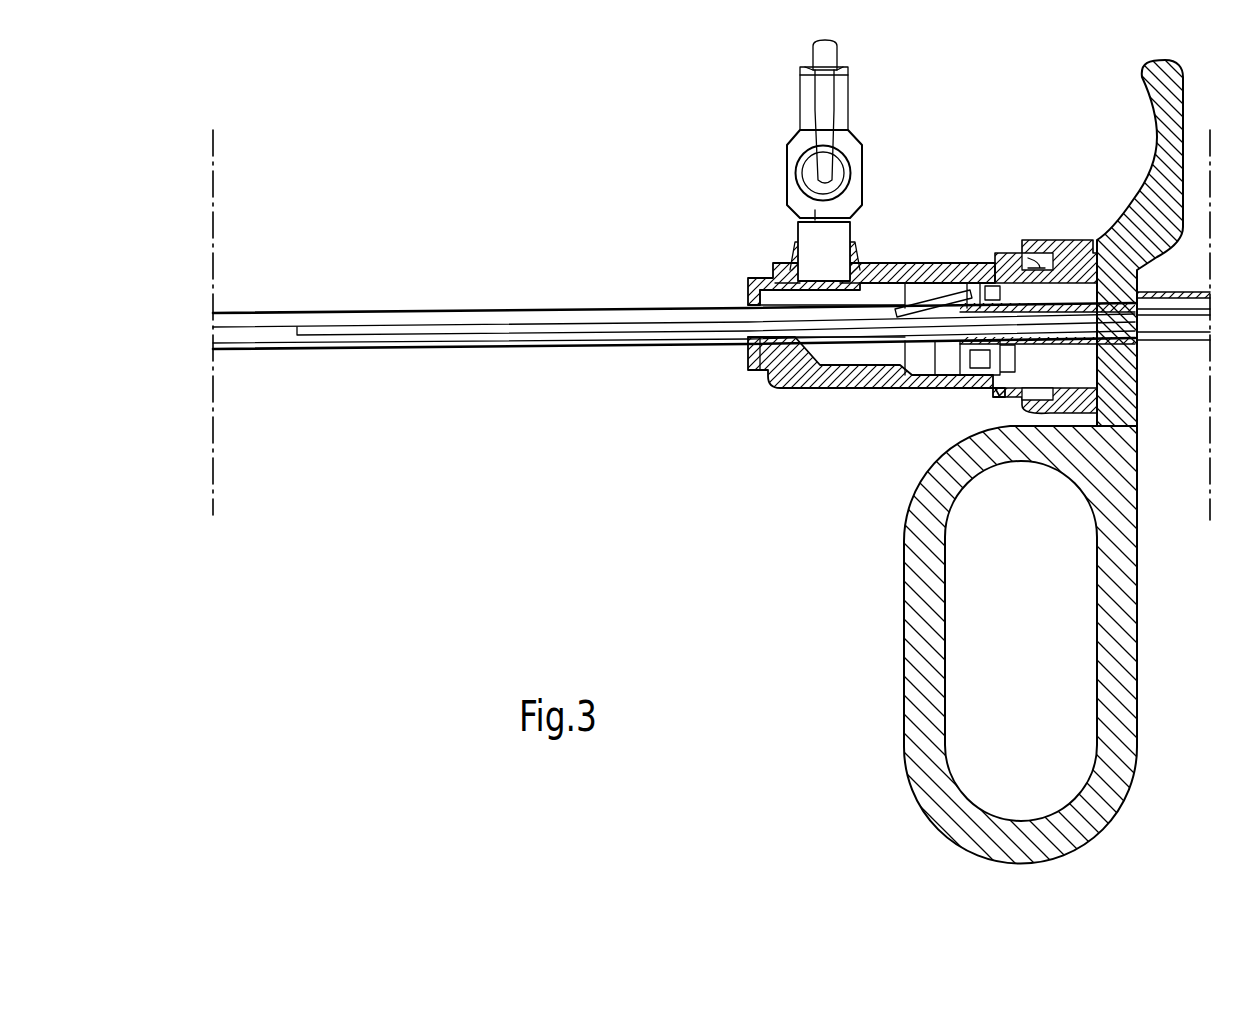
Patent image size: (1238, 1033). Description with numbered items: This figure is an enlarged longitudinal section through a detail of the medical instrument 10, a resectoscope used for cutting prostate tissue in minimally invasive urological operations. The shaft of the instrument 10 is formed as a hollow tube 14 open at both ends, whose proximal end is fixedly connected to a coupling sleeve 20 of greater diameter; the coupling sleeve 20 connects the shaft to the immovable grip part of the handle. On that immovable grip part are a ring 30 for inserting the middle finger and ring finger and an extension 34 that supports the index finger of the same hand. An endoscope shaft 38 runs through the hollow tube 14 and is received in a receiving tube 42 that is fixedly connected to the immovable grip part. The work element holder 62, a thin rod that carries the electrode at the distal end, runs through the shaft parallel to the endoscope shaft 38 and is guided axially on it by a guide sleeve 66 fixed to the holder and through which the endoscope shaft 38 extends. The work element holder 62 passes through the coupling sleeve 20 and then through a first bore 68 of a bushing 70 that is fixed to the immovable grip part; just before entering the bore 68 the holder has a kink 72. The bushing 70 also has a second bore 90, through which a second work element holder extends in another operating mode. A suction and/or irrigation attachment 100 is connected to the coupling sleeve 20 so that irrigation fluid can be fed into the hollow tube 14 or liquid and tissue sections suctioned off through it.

The medical instrument 10 is at (623, 150).
The hollow tube 14 is at (497, 308).
The coupling sleeve 20 is at (835, 388).
The ring 30 is at (900, 607).
The extension 34 is at (1160, 140).
The endoscope shaft 38 is at (408, 343).
The receiving tube 42 is at (1178, 342).
The work element holder 62 is at (360, 313).
The guide sleeve 66 is at (270, 337).
The first bore 68 is at (1060, 245).
The bushing 70 is at (1030, 262).
The kink 72 is at (938, 300).
The second bore 90 is at (975, 390).
The suction and/or irrigation attachment 100 is at (860, 133).